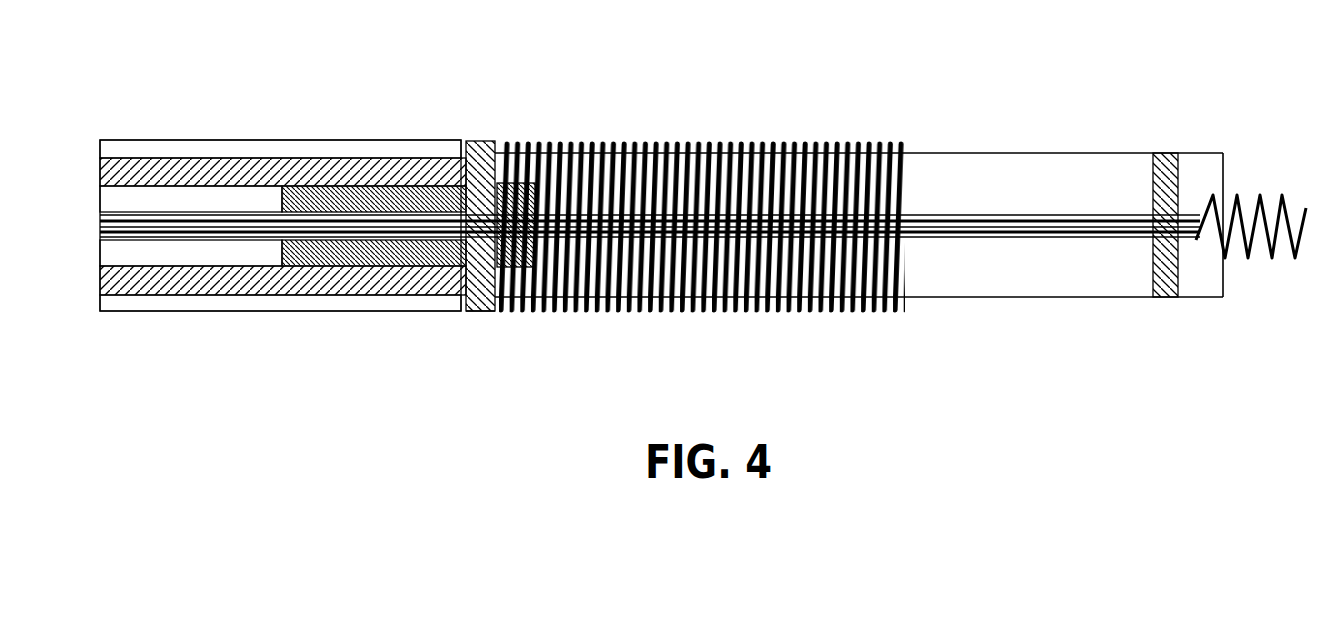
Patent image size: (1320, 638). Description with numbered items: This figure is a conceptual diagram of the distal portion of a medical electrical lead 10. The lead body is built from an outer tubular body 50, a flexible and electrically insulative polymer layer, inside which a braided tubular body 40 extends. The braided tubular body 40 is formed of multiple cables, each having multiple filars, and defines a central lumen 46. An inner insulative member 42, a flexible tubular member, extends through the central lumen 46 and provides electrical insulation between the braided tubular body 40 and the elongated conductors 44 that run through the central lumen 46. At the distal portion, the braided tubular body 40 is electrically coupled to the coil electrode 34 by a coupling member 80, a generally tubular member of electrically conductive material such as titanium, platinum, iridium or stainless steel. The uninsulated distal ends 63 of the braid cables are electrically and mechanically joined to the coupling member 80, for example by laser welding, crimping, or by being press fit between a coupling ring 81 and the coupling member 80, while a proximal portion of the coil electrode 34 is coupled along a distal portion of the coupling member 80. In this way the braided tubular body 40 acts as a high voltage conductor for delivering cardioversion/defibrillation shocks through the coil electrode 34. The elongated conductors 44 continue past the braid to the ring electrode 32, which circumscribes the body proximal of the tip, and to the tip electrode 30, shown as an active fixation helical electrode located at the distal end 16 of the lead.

The lead 10 is at (720, 29).
The braided tubular body 40 is at (152, 170).
The outer tubular body 50 is at (234, 140).
The inner insulative member 42 is at (218, 258).
The central lumen 46 is at (247, 245).
The coupling member 80 is at (470, 141).
The coupling ring 81 is at (470, 312).
The uninsulated distal ends 63 is at (513, 312).
The elongated conductors 44 is at (978, 238).
The coil electrode 34 is at (625, 142).
The ring electrode 32 is at (1168, 153).
The distal end 16 is at (1223, 297).
The tip electrode 30 is at (1262, 195).